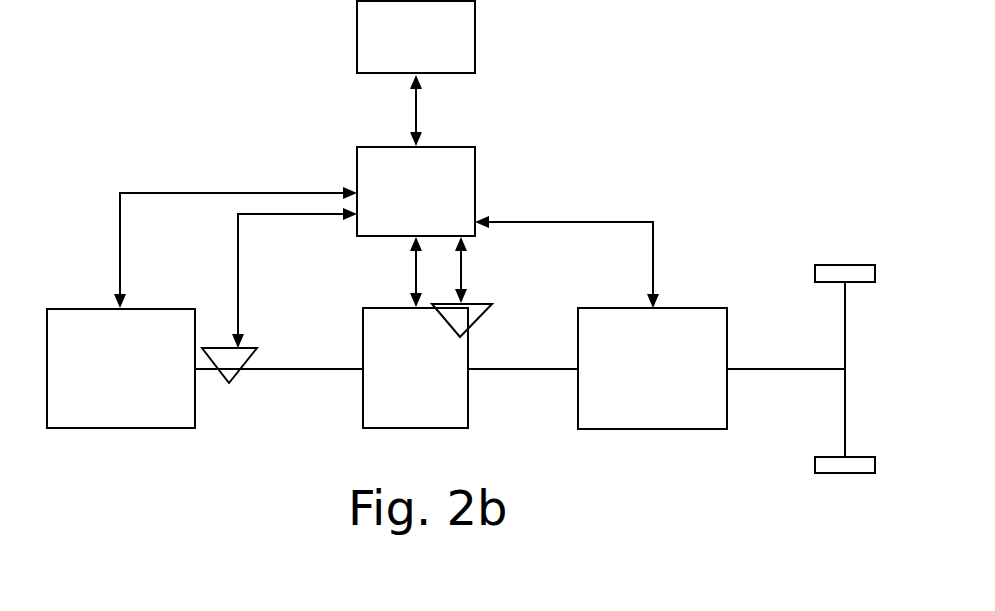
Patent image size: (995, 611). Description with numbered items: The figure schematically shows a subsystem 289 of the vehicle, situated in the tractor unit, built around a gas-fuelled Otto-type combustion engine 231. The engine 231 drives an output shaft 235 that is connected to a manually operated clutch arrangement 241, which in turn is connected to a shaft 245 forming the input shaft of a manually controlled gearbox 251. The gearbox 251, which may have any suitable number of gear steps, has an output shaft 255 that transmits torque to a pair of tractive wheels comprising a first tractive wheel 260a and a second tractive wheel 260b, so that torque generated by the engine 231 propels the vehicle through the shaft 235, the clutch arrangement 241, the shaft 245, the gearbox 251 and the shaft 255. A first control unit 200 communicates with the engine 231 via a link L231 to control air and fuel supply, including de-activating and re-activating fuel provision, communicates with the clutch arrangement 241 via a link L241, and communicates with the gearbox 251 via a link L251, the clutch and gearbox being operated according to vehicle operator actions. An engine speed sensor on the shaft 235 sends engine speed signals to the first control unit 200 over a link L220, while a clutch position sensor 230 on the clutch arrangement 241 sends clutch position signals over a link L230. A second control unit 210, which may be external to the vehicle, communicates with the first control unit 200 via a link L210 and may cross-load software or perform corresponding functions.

The subsystem 289 is at (600, 125).
The second control unit 210 is at (416, 37).
The first control unit 200 is at (416, 191).
The combustion engine 231 is at (121, 368).
The clutch arrangement 241 is at (415, 368).
The gearbox 251 is at (652, 368).
The clutch position sensor 230 is at (481, 311).
The output shaft 235 is at (280, 370).
The shaft 245 is at (522, 369).
The output shaft 255 is at (768, 369).
The first tractive wheel 260a is at (837, 265).
The second tractive wheel 260b is at (845, 473).
The link L210 is at (417, 117).
The link L231 is at (122, 210).
The link L220 is at (292, 335).
The link L241 is at (412, 275).
The link L230 is at (465, 275).
The link L251 is at (653, 228).